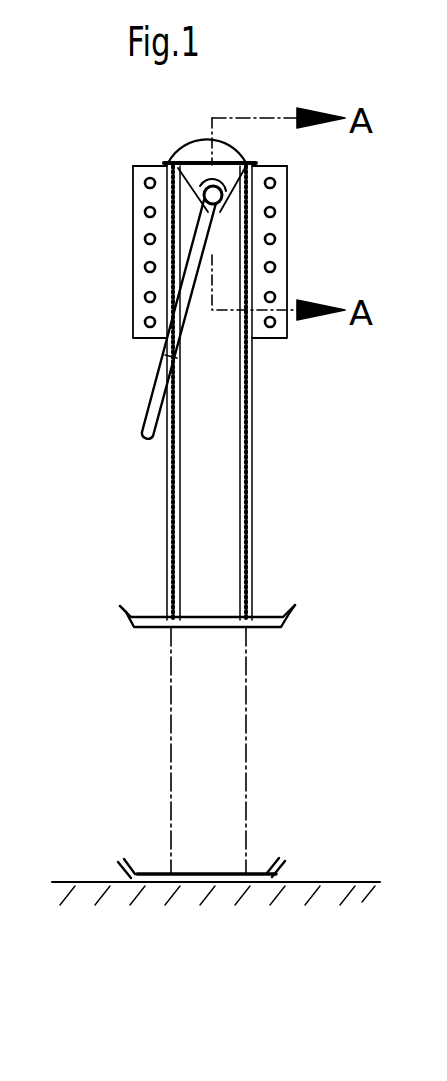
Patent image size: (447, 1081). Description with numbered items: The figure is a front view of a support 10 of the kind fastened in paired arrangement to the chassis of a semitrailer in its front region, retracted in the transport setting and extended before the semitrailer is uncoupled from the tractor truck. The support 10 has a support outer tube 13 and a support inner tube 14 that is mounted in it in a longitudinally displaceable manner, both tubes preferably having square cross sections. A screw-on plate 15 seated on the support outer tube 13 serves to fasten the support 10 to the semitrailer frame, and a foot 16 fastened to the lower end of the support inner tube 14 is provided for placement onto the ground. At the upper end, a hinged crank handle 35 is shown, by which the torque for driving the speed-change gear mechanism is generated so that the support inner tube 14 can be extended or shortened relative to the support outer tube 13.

The support 10 is at (111, 160).
The support outer tube 13 is at (253, 468).
The support inner tube 14 is at (243, 668).
The screw-on plate 15 is at (133, 281).
The foot 16 is at (270, 614).
The hinged crank handle 35 is at (145, 388).